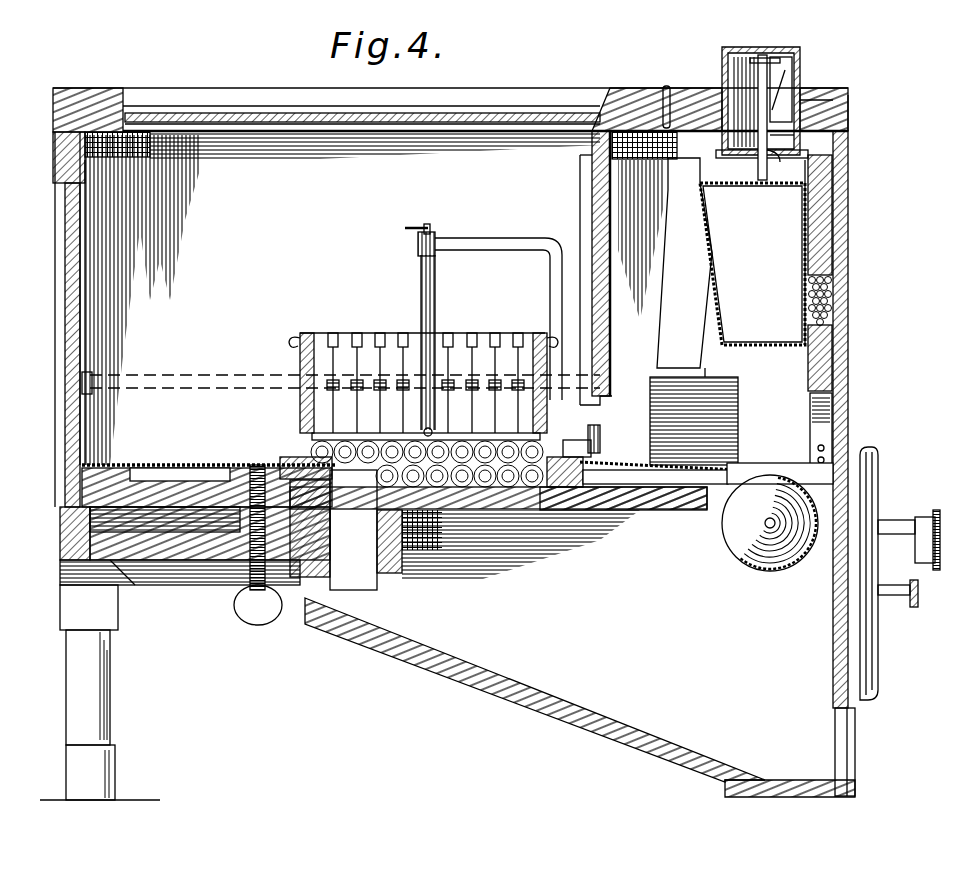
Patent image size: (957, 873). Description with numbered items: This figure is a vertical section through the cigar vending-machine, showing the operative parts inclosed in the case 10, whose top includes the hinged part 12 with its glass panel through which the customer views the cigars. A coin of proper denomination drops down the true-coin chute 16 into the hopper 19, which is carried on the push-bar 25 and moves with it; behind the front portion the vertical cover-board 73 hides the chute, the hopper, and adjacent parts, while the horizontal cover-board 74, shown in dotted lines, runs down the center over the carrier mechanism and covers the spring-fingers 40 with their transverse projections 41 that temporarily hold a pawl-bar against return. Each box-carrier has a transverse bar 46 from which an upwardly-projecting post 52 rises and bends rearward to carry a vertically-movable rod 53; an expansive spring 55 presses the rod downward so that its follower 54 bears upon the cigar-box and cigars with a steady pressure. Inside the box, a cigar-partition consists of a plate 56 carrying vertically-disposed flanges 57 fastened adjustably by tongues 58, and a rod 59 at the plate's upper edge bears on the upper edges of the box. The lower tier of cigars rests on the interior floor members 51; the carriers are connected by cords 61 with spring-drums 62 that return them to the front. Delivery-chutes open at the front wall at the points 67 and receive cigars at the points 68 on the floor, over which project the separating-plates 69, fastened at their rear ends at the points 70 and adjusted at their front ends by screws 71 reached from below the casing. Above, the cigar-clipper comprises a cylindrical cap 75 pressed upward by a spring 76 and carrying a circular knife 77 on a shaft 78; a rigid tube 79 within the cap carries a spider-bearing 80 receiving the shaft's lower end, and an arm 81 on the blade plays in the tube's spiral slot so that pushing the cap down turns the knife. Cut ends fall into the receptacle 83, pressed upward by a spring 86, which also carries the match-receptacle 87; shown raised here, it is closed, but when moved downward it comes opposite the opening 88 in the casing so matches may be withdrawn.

The case 10 is at (845, 430).
The hinged part 12 is at (552, 98).
The true-coin chute 16 is at (684, 267).
The hopper 19 is at (740, 440).
The push-bar 25 is at (893, 522).
The spring-fingers 40 is at (628, 484).
The transverse projections 41 is at (608, 484).
The transverse bar 46 is at (548, 490).
The floor members 51 is at (600, 488).
The post 52 is at (550, 285).
The rod 53 is at (432, 232).
The follower 54 is at (440, 445).
The spring 55 is at (420, 305).
The plate 56 is at (318, 338).
The flanges 57 is at (340, 352).
The tongues 58 is at (443, 340).
The rod 59 is at (298, 335).
The cords 61 is at (612, 458).
The spring-drums 62 is at (770, 523).
The delivery-chute openings 67 is at (845, 738).
The receiving ends 68 is at (341, 523).
The separating-plates 69 is at (255, 463).
The fastening points 70 is at (108, 463).
The screws 71 is at (272, 634).
The cover-board 73 is at (608, 196).
The cover-board 74 is at (195, 378).
The cylindrical cap 75 is at (800, 60).
The spring 76 is at (850, 110).
The circular knife 77 is at (780, 58).
The shaft 78 is at (757, 50).
The rigid tube 79 is at (735, 438).
The spider-bearing 80 is at (780, 160).
The arm 81 is at (778, 78).
The receptacle 83 is at (752, 264).
The spring 86 is at (832, 412).
The match-receptacle 87 is at (820, 220).
The opening 88 is at (837, 90).